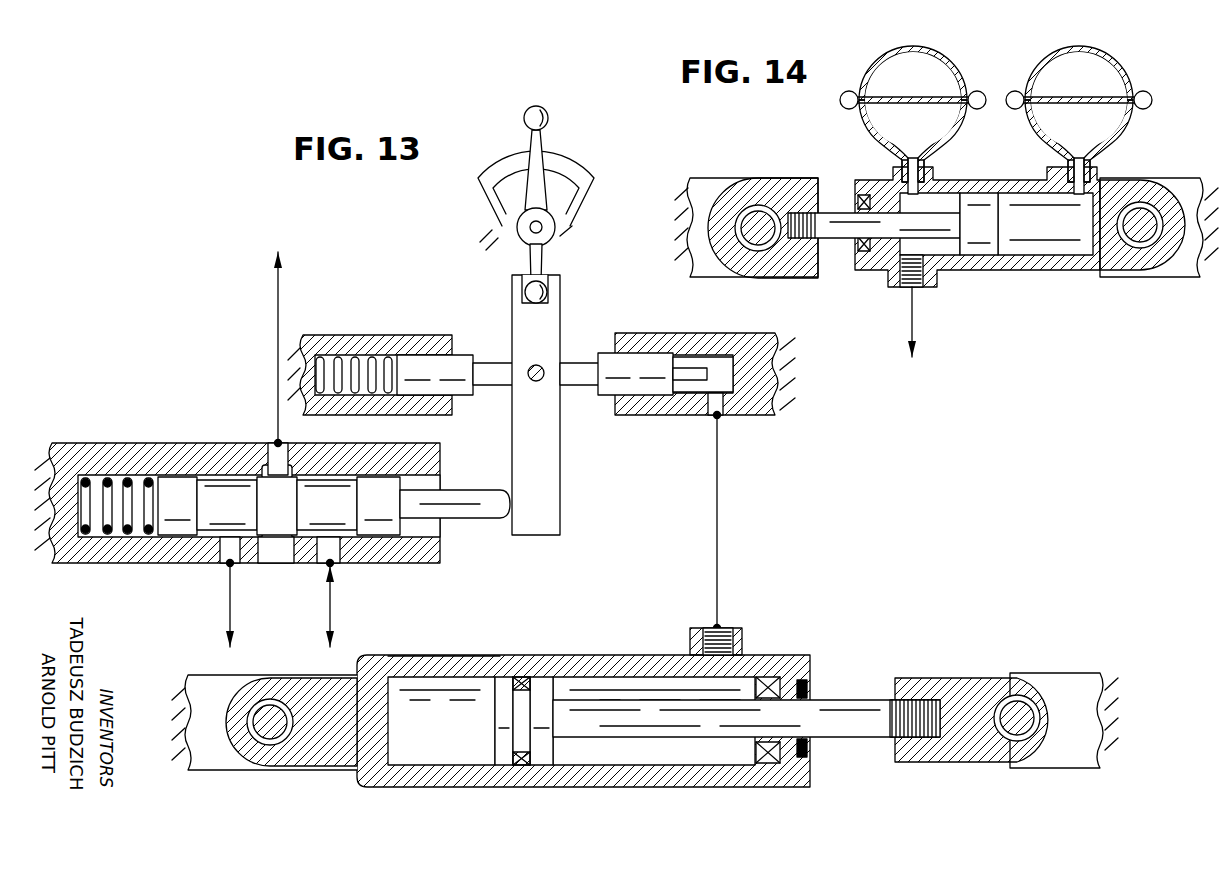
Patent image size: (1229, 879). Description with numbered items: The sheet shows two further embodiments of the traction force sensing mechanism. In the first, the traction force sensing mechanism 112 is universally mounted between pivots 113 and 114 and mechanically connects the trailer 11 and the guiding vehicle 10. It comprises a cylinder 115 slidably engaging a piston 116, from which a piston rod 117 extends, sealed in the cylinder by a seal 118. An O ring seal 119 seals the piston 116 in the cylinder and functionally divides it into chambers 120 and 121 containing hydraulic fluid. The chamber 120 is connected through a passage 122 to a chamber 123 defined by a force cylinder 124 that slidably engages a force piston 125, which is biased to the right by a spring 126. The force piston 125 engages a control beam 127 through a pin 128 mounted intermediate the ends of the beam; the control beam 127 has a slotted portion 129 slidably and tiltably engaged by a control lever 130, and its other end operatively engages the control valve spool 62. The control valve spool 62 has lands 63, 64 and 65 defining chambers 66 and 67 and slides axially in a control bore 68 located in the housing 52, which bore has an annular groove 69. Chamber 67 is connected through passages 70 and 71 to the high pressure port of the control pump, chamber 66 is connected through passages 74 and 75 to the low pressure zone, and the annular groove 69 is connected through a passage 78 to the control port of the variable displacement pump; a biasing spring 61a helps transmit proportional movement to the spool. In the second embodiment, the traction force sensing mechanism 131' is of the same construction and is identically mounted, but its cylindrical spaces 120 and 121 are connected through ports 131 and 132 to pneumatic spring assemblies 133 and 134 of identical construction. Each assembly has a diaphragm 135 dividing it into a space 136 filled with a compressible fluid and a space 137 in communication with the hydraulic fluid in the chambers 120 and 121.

In FIG. 13, the guiding vehicle 10 is at (212, 677).
In FIG. 14, the guiding vehicle 10 is at (1179, 178).
In FIG. 13, the trailer 11 is at (1074, 676).
In FIG. 14, the trailer 11 is at (709, 180).
In FIG. 13, the housing 52 is at (108, 563).
In FIG. 13, the biasing spring 61a is at (90, 470).
In FIG. 13, the control valve spool 62 is at (478, 507).
In FIG. 13, the land 63 is at (383, 522).
In FIG. 13, the land 64 is at (285, 522).
In FIG. 13, the land 65 is at (175, 522).
In FIG. 13, the chamber 66 is at (223, 480).
In FIG. 13, the chamber 67 is at (325, 476).
In FIG. 13, the control bore 68 is at (117, 475).
In FIG. 13, the annular groove 69 is at (268, 545).
In FIG. 13, the passage 70 is at (331, 558).
In FIG. 13, the passage 71 is at (331, 618).
In FIG. 13, the passage 74 is at (224, 552).
In FIG. 13, the passage 75 is at (230, 612).
In FIG. 13, the passage 78 is at (277, 320).
In FIG. 13, the traction force sensing mechanism 112 is at (627, 654).
In FIG. 13, the pivot 113 is at (272, 707).
In FIG. 13, the pivot 114 is at (1005, 710).
In FIG. 13, the cylinder 115 is at (455, 660).
In FIG. 13, the piston 116 is at (540, 680).
In FIG. 13, the piston rod 117 is at (692, 728).
In FIG. 13, the seal 118 is at (768, 680).
In FIG. 13, the O ring seal 119 is at (528, 766).
In FIG. 13, the chamber 120 is at (640, 766).
In FIG. 14, the chamber 120 is at (946, 252).
In FIG. 13, the chamber 121 is at (458, 740).
In FIG. 14, the chamber 121 is at (1034, 250).
In FIG. 13, the passage 122 is at (718, 518).
In FIG. 14, the passage 122 is at (914, 332).
In FIG. 13, the chamber 123 is at (732, 388).
In FIG. 13, the force cylinder 124 is at (703, 345).
In FIG. 13, the force piston 125 is at (652, 394).
In FIG. 13, the spring 126 is at (358, 356).
In FIG. 13, the control beam 127 is at (560, 478).
In FIG. 13, the pin 128 is at (542, 380).
In FIG. 13, the slotted portion 129 is at (548, 304).
In FIG. 13, the control lever 130 is at (540, 140).
In FIG. 14, the port 131 is at (1052, 170).
In FIG. 14, the traction force sensing mechanism 131' is at (972, 240).
In FIG. 14, the port 132 is at (926, 172).
In FIG. 14, the pneumatic spring assembly 133 is at (1106, 58).
In FIG. 14, the pneumatic spring assembly 134 is at (889, 60).
In FIG. 14, the diaphragm 135 is at (900, 104).
In FIG. 14, the space 136 is at (930, 68).
In FIG. 14, the space 137 is at (880, 125).